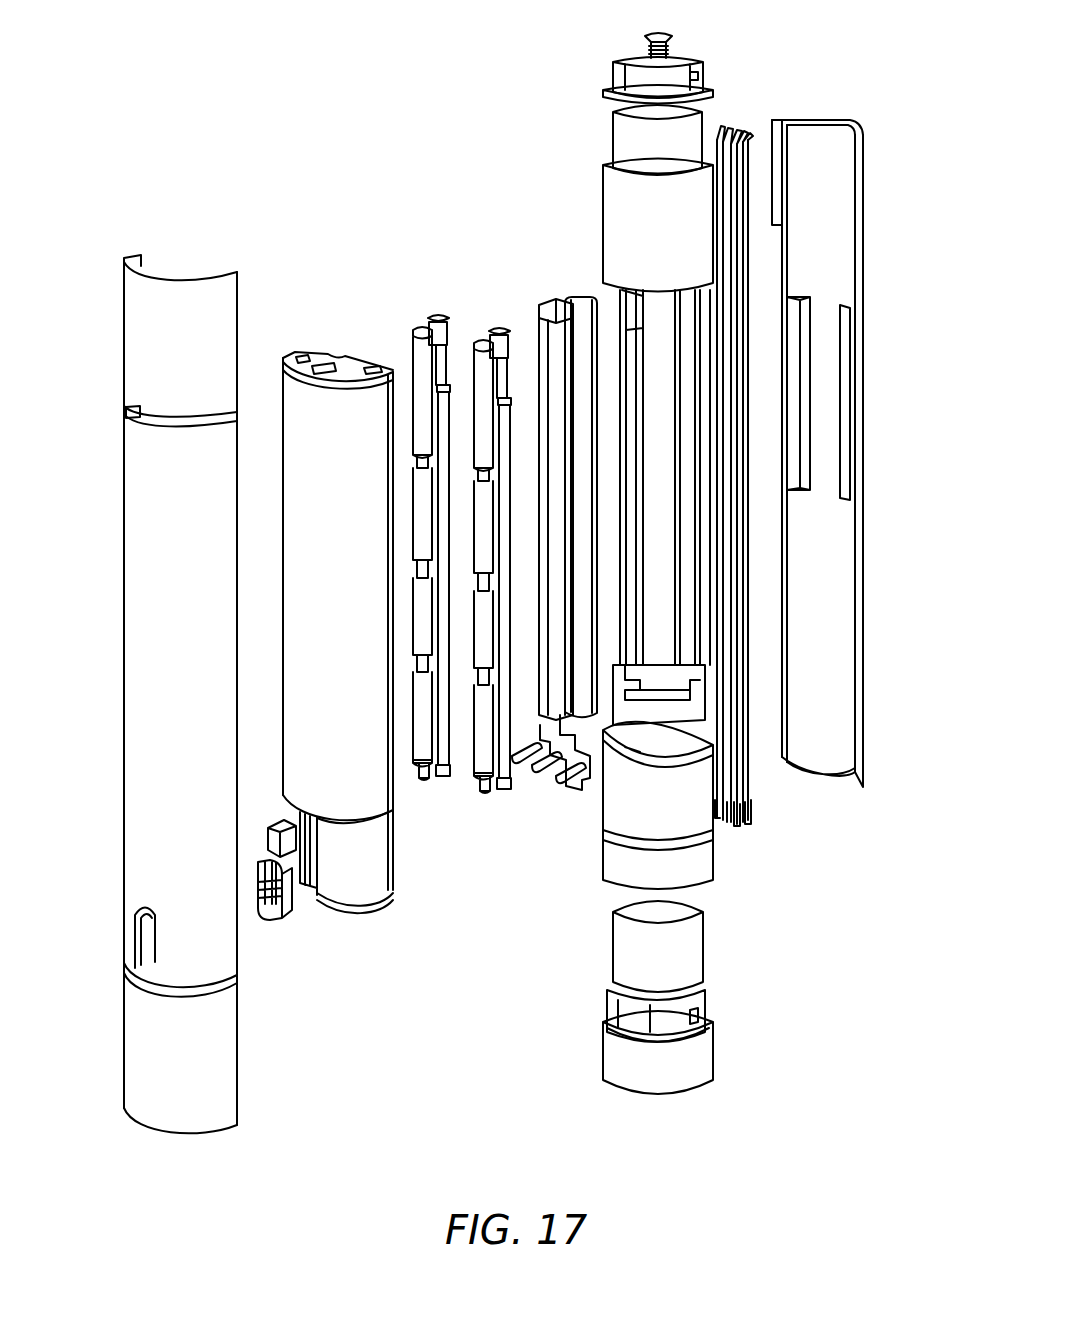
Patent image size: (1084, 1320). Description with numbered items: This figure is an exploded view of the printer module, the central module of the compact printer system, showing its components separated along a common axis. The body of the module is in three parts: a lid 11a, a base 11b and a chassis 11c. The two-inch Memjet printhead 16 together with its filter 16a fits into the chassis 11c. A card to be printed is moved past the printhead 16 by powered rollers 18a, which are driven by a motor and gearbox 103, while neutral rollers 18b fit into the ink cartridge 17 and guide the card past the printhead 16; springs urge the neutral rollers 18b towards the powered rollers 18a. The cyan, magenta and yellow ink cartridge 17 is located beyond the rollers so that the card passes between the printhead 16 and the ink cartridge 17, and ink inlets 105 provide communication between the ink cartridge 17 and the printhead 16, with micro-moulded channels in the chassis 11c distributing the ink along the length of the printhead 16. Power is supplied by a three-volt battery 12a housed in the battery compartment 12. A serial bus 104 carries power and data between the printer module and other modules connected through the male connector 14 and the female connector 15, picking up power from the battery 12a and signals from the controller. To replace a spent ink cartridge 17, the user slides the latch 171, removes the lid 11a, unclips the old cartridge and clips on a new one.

The lid 11a is at (124, 512).
The base 11b is at (866, 668).
The chassis 11c is at (605, 182).
The battery compartment 12 is at (690, 835).
The battery 12a is at (705, 958).
The male connector 14 is at (688, 58).
The female connector 15 is at (715, 1048).
The printhead 16 is at (548, 302).
The filter 16a is at (585, 297).
The ink cartridge 17 is at (322, 360).
The latch 171 is at (288, 922).
The powered rollers 18a is at (498, 326).
The neutral rollers 18b is at (486, 798).
The motor and gearbox 103 is at (613, 120).
The serial bus 104 is at (750, 772).
The ink inlets 105 is at (550, 782).